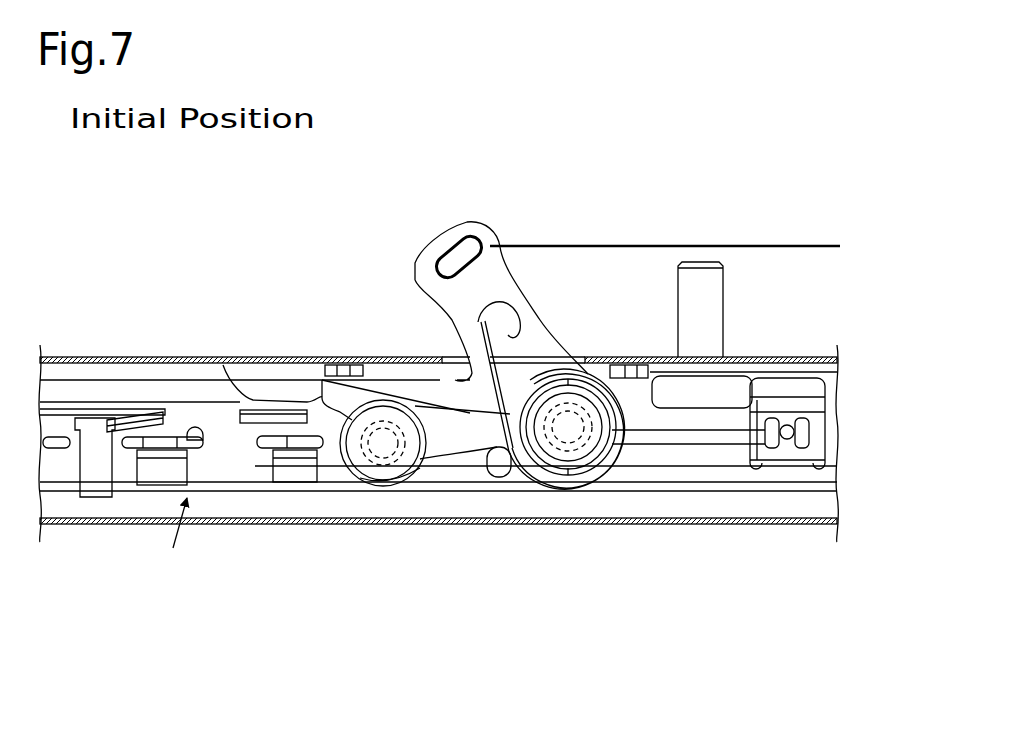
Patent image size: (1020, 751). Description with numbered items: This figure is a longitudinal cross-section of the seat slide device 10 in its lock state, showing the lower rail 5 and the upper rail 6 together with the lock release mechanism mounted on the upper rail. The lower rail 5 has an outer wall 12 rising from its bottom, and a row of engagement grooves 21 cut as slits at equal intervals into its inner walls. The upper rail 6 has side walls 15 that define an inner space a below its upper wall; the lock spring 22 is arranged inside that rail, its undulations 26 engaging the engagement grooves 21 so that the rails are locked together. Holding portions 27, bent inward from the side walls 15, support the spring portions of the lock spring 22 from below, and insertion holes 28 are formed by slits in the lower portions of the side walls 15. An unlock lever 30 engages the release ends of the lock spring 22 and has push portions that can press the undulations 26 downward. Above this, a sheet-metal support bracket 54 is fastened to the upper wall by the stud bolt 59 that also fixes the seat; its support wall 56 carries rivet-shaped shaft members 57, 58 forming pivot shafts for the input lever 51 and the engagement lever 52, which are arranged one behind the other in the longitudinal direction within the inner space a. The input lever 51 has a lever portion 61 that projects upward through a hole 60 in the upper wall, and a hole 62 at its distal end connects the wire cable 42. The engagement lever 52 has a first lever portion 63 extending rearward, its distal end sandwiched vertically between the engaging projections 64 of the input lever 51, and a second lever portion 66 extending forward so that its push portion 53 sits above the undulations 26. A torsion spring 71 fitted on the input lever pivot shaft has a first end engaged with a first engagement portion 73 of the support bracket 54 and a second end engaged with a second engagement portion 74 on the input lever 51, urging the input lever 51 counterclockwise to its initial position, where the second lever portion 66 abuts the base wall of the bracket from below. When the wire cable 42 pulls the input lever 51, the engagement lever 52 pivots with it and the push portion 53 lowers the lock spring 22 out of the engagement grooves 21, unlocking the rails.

The lower rail 5 is at (773, 524).
The upper rail 6 is at (110, 410).
The seat slide device 10 is at (714, 166).
The outer wall 12 is at (822, 512).
The side wall 15 is at (683, 458).
The engagement groove 21 is at (70, 420).
The lock spring 22 is at (727, 443).
The undulations 26 is at (222, 487).
The holding portion 27 is at (803, 417).
The insertion hole 28 is at (50, 482).
The unlock lever 30 is at (142, 413).
The wire cable 42 is at (785, 246).
The input lever 51 is at (497, 246).
The engagement lever 52 is at (388, 487).
The push portion 53 is at (262, 408).
The support bracket 54 is at (320, 378).
The support wall 56 is at (413, 380).
The shaft member 57 is at (550, 380).
The shaft member 58 is at (347, 468).
The stud bolt 59 is at (724, 272).
The hole 60 is at (628, 365).
The lever portion 61 is at (437, 243).
The hole 62 is at (475, 242).
The first lever portion 63 is at (500, 474).
The engaging projections 64 is at (417, 398).
The second lever portion 66 is at (350, 366).
The torsion spring 71 is at (520, 278).
The first engagement portion 73 is at (623, 482).
The second engagement portion 74 is at (512, 318).
The inner space a is at (171, 545).